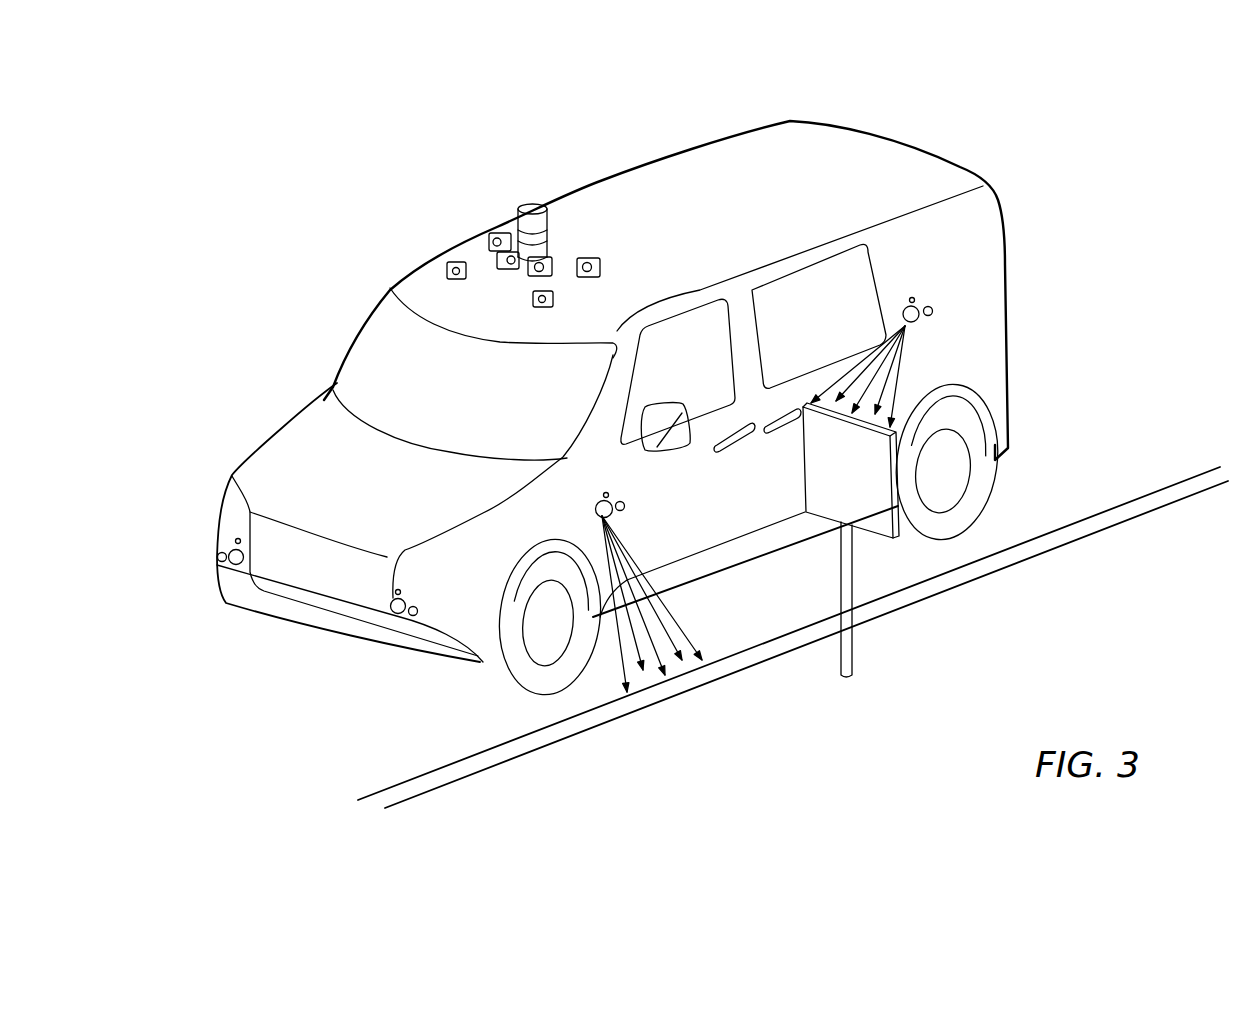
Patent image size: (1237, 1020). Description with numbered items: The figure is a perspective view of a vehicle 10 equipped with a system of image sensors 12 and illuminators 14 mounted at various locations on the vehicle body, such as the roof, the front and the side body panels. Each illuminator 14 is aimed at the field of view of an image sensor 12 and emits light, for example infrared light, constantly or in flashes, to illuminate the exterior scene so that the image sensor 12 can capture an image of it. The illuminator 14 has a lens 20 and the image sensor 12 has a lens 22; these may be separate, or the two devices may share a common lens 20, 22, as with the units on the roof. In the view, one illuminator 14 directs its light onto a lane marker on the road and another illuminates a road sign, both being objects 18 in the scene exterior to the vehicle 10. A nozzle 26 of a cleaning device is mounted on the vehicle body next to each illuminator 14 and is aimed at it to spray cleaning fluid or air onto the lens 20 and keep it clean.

The vehicle 10 is at (932, 117).
The image sensor 12 is at (531, 200).
The illuminator 14 is at (440, 272).
The objects 18 is at (872, 510).
The lens of the illuminator 20 is at (520, 222).
The lens of the image sensor 22 is at (450, 277).
The nozzle 26 is at (912, 297).